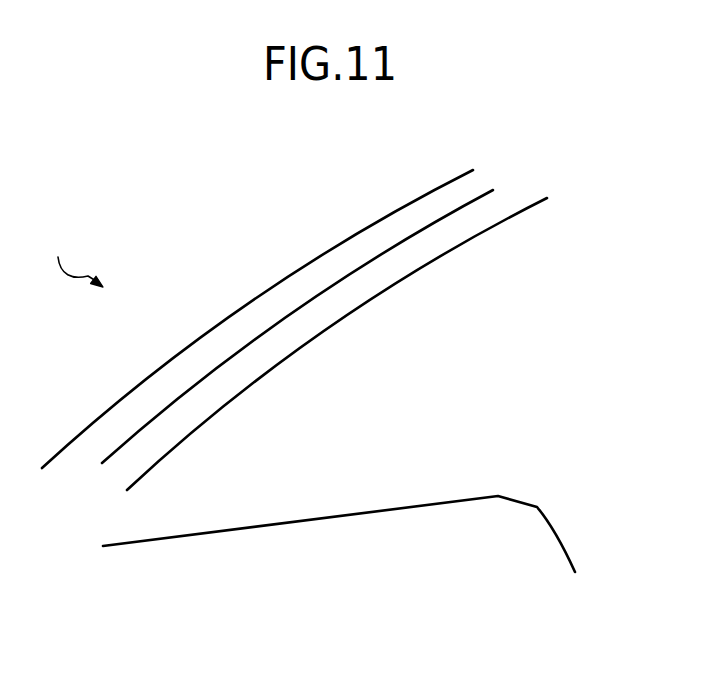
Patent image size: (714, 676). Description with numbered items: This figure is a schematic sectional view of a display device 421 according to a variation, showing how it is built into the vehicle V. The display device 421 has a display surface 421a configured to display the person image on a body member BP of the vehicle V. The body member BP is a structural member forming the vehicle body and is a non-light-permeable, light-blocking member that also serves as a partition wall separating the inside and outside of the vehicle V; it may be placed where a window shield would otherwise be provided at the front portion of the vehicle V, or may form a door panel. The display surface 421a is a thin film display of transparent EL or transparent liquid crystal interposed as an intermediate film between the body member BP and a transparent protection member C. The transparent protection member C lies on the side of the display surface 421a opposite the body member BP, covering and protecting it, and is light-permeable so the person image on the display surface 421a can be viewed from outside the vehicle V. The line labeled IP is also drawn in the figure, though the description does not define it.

The transparent protection member C is at (405, 207).
The display surface 421a is at (270, 315).
The display device 421 is at (297, 326).
The body member BP is at (507, 220).
The inner peripheral line IP is at (517, 498).
The vehicle V is at (75, 258).